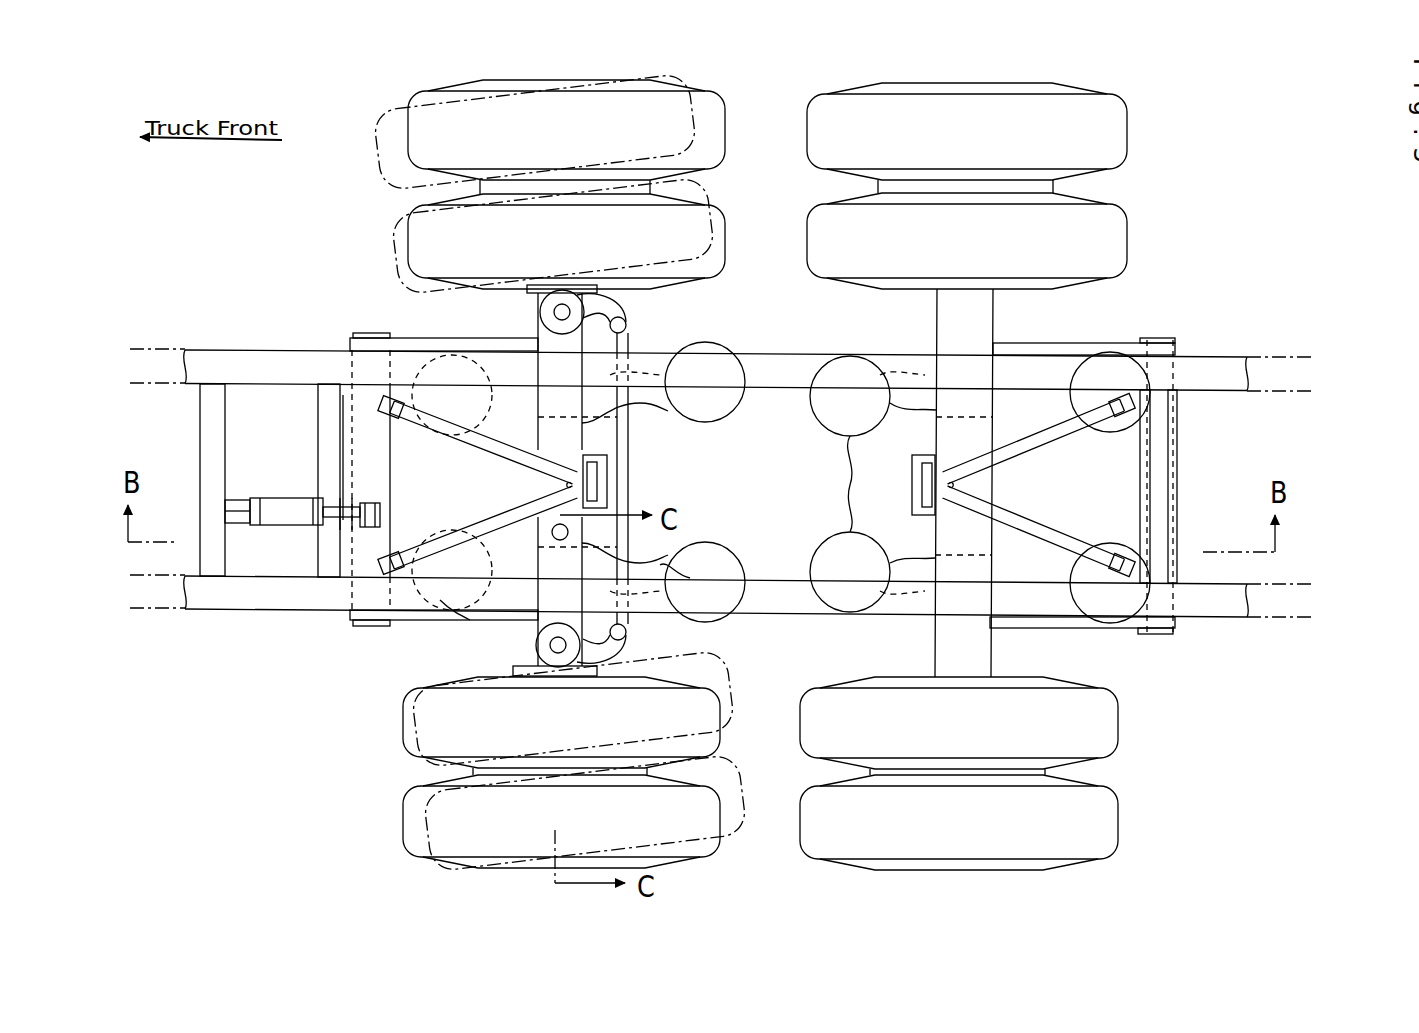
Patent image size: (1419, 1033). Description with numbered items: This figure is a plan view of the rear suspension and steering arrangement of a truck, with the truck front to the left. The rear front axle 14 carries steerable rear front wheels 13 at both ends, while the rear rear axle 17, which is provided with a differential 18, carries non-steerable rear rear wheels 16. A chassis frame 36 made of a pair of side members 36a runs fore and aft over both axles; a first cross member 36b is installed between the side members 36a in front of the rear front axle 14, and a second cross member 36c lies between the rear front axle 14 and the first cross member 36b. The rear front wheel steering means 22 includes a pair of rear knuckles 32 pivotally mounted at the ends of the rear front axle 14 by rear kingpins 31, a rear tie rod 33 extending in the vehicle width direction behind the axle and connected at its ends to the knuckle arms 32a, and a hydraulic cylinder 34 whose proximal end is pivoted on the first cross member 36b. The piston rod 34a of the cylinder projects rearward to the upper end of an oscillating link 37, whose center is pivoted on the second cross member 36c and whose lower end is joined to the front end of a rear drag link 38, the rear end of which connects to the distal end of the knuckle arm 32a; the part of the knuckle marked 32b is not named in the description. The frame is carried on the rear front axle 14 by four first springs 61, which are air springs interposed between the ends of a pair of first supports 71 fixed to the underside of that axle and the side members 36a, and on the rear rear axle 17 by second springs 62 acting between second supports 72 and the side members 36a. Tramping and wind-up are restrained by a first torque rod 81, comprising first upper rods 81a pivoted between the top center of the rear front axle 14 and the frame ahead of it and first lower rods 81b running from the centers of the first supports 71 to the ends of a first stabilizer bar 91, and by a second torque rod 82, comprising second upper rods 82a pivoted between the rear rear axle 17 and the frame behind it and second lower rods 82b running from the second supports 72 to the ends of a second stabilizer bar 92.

The rear front wheels 13 is at (727, 145).
The rear front axle 14 is at (492, 485).
The rear rear wheels 16 is at (1127, 112).
The rear rear axle 17 is at (937, 326).
The differential 18 is at (1023, 484).
The rear front wheel steering means 22 is at (270, 548).
The rear kingpin 31 is at (562, 300).
The rear knuckle 32 is at (537, 292).
The knuckle arm 32a is at (615, 318).
The bracket 32b is at (650, 568).
The rear tie rod 33 is at (628, 436).
The hydraulic cylinder 34 is at (290, 497).
The piston rod 34a is at (330, 525).
The chassis frame 36 is at (1208, 356).
The side members 36a is at (1205, 396).
The first cross member 36b is at (200, 416).
The second cross member 36c is at (317, 403).
The oscillating link 37 is at (383, 524).
The rear drag link 38 is at (458, 622).
The first springs 61 is at (708, 421).
The second springs 62 is at (812, 415).
The first supports 71 is at (645, 375).
The second supports 72 is at (893, 360).
The first torque rod 81 is at (468, 497).
The first upper rods 81a is at (478, 485).
The first lower rods 81b is at (475, 340).
The second torque rod 82 is at (1043, 480).
The second upper rods 82a is at (1068, 432).
The second lower rods 82b is at (998, 347).
The first stabilizer bar 91 is at (343, 420).
The second stabilizer bar 92 is at (1180, 473).